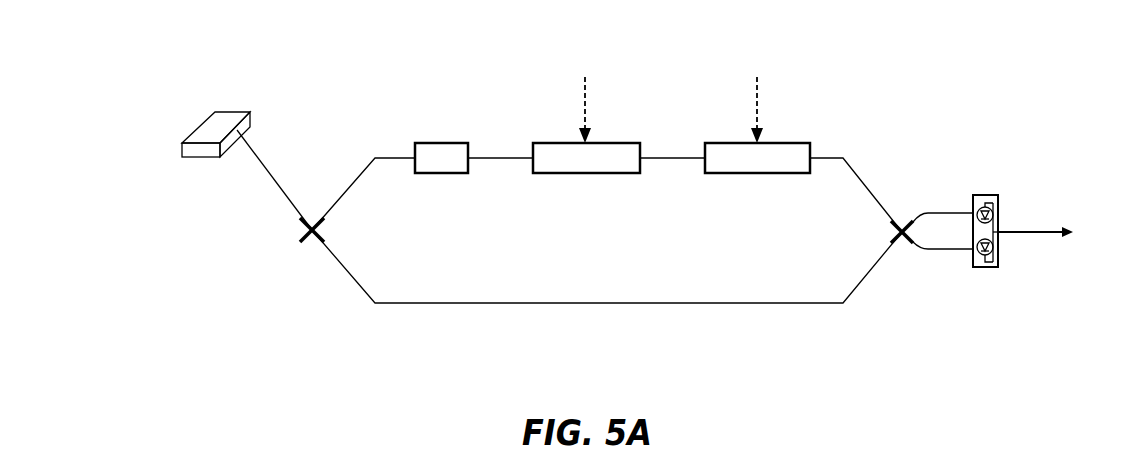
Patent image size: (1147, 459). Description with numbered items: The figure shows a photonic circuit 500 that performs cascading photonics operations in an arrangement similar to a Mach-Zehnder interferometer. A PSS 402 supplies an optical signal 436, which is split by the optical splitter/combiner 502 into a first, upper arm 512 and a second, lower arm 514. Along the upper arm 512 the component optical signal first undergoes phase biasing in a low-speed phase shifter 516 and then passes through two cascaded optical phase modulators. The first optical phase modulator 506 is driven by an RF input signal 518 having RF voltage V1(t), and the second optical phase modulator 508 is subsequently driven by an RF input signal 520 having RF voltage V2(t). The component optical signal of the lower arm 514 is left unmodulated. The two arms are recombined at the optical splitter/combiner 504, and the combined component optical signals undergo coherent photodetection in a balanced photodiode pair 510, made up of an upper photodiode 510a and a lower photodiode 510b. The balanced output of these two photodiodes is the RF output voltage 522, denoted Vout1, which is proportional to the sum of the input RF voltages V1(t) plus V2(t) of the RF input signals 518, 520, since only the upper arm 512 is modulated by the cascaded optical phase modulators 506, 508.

The photonic circuit 500 is at (90, 103).
The PSS 402 is at (200, 160).
The optical signal 436 is at (278, 185).
The optical splitter/combiner 502 is at (302, 242).
The upper arm 512 is at (343, 202).
The lower arm 514 is at (337, 265).
The low-speed phase shifter 516 is at (442, 143).
The optical phase modulator 506 is at (548, 173).
The optical phase modulator 508 is at (728, 173).
The RF input signal 518 is at (583, 122).
The RF input signal 520 is at (755, 122).
The optical splitter/combiner 504 is at (898, 222).
The balanced photodiode pair 510 is at (982, 233).
The upper photodiode 510a is at (993, 213).
The lower photodiode 510b is at (1014, 269).
The RF output voltage 522 is at (1028, 230).